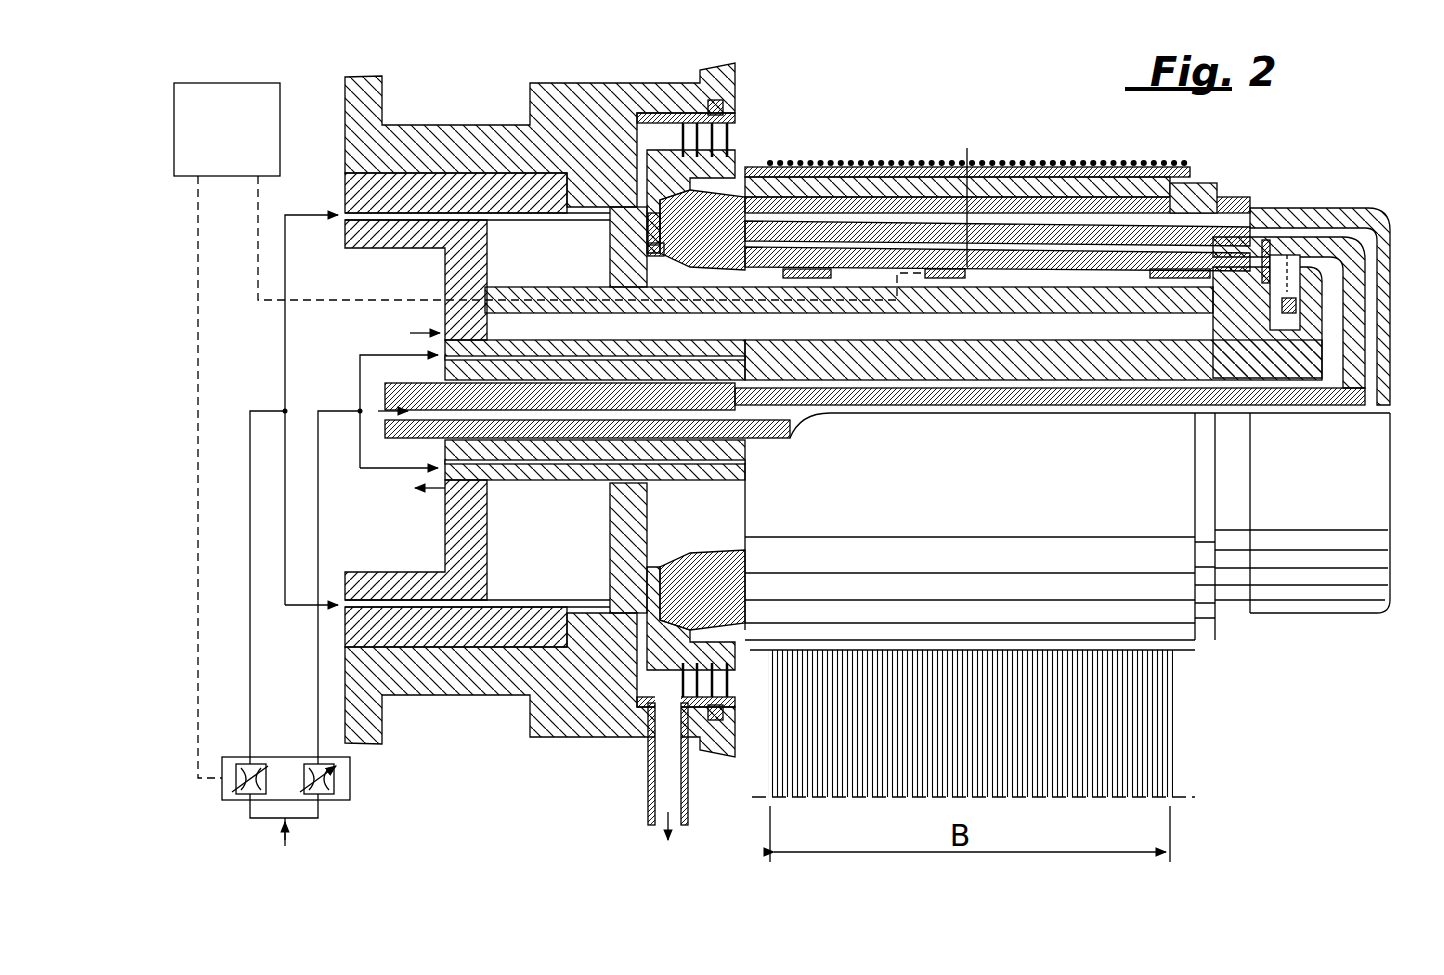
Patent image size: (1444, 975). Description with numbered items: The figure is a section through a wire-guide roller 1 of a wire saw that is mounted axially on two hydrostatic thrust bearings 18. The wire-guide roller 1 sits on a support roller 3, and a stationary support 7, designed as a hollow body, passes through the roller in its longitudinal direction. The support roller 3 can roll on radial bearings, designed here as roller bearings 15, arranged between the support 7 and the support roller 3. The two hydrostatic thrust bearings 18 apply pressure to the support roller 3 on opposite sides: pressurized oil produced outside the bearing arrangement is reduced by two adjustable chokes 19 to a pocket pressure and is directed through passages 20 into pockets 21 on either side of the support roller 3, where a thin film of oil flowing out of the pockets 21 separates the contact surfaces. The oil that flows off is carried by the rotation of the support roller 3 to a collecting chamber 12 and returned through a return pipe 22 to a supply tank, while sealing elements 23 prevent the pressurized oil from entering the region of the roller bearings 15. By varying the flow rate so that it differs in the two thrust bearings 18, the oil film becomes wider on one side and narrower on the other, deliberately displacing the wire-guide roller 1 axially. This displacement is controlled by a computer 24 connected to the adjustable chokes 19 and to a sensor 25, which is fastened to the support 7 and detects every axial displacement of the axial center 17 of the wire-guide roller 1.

The wire-guide roller 1 is at (1071, 163).
The support roller 3 is at (1107, 205).
The support 7 is at (1336, 358).
The collecting chamber 12 is at (663, 130).
The roller bearings 15 is at (785, 270).
The axial center 17 is at (967, 148).
The hydrostatic thrust bearings 18 is at (650, 228).
The adjustable chokes 19 is at (346, 790).
The passages 20 is at (325, 214).
The pockets 21 is at (1268, 252).
The return pipe 22 is at (664, 796).
The sealing elements 23 is at (651, 254).
The computer 24 is at (228, 100).
The sensor 25 is at (940, 272).